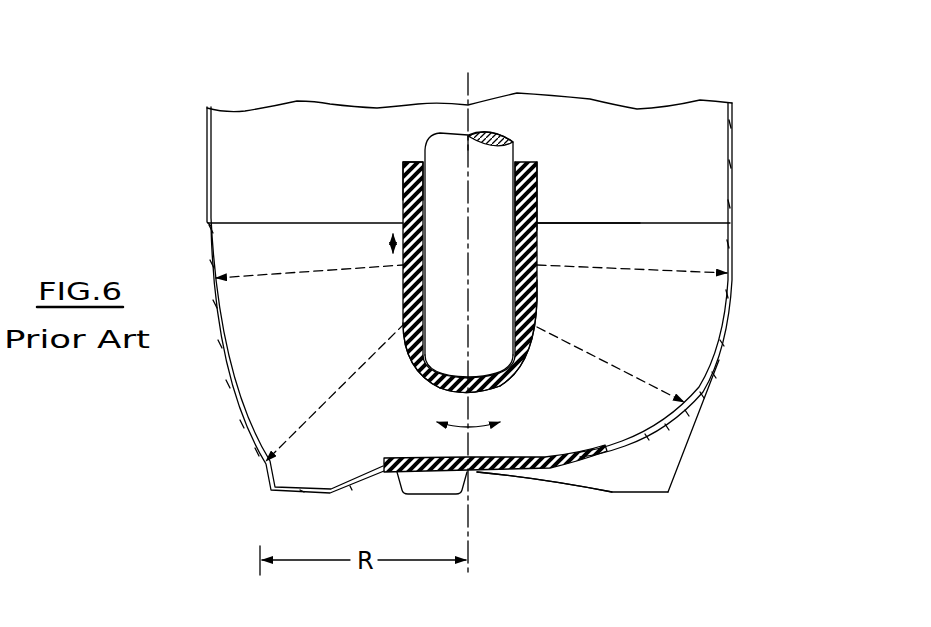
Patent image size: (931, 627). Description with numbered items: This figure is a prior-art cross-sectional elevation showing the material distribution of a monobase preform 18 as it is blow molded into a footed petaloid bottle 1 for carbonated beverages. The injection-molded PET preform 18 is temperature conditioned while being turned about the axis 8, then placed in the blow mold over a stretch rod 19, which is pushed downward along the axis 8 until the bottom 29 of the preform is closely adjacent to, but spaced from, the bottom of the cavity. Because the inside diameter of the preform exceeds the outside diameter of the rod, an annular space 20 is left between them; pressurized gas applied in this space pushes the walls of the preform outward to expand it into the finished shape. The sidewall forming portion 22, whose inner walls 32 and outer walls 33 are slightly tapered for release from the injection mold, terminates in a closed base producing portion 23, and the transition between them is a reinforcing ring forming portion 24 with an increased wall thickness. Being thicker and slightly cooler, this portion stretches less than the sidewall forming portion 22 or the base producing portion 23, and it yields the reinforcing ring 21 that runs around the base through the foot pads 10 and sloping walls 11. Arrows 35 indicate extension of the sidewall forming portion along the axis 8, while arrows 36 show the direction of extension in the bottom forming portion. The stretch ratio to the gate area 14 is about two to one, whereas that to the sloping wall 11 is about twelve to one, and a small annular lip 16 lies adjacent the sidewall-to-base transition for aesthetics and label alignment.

The bottle 1 is at (770, 266).
The axis 8 is at (469, 88).
The foot pads 10 is at (280, 496).
The sloping wall 11 is at (693, 447).
The gate area 14 is at (477, 478).
The annular lip 16 is at (731, 222).
The monobase preform 18 is at (556, 165).
The stretch rod 19 is at (523, 148).
The annular space 20 is at (414, 162).
The reinforcing ring 21 is at (685, 396).
The sidewall forming portion 22 is at (533, 256).
The base producing portion 23 is at (527, 370).
The reinforcing ring forming portion 24 is at (521, 307).
The bottom 29 is at (458, 392).
The inner walls 32 is at (537, 193).
The outer walls 33 is at (549, 224).
The arrows 35 is at (390, 242).
The arrows 36 is at (452, 435).